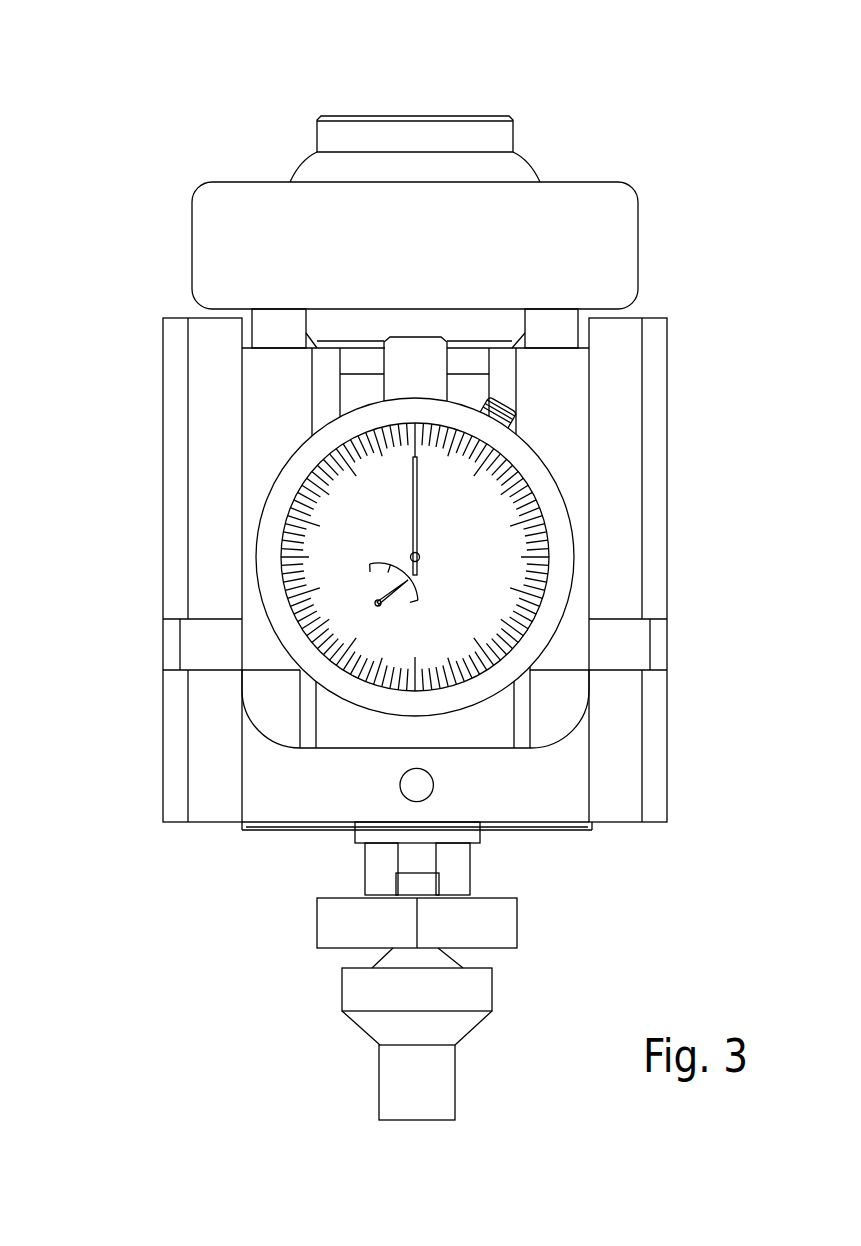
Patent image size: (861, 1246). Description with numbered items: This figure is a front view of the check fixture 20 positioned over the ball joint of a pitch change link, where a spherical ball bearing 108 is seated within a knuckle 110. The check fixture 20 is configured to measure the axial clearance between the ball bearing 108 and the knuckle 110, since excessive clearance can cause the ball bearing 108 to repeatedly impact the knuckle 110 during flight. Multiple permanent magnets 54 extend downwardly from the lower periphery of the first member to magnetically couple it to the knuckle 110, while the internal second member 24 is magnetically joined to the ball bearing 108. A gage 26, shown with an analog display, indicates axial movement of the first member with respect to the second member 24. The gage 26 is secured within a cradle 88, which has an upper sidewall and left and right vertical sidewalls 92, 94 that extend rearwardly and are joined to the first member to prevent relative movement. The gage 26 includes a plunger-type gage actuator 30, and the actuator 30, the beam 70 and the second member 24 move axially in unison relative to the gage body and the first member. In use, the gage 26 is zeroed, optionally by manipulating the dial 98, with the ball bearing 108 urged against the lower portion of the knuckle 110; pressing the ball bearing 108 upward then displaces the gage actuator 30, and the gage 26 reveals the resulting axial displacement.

The check fixture 20 is at (116, 92).
The ball bearing 108 is at (512, 165).
The knuckle 110 is at (552, 274).
The permanent magnets 54 is at (283, 327).
The dial 98 is at (420, 386).
The gage 26 is at (570, 513).
The right vertical sidewall 94 is at (163, 718).
The left vertical sidewall 92 is at (667, 752).
The cradle 88 is at (626, 774).
The gage actuator 30 is at (407, 855).
The second member 24 is at (457, 880).
The beam 70 is at (340, 925).